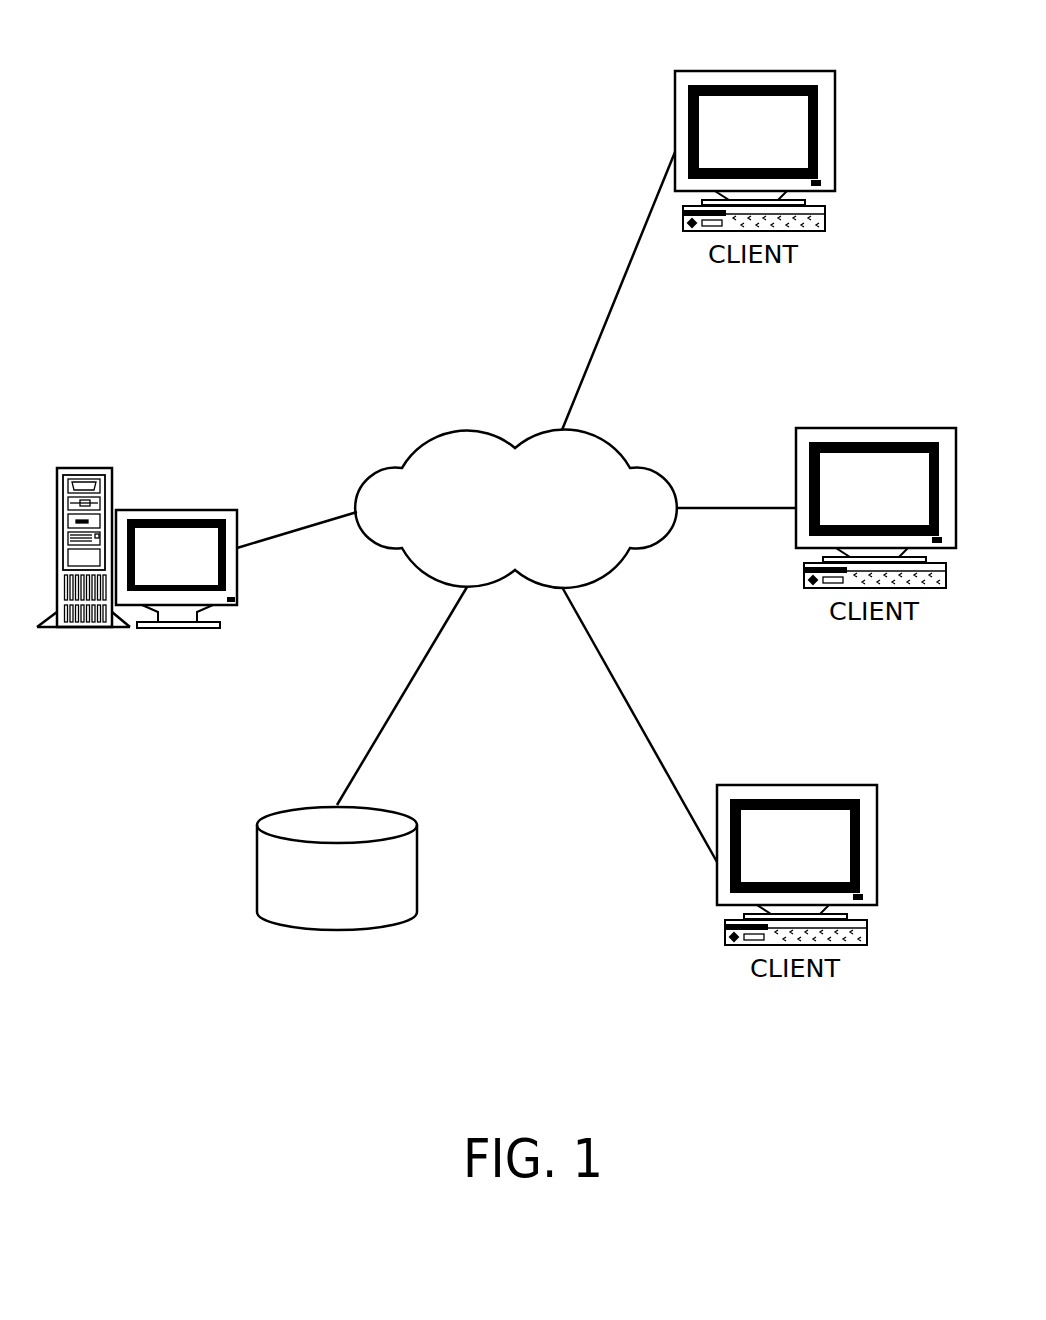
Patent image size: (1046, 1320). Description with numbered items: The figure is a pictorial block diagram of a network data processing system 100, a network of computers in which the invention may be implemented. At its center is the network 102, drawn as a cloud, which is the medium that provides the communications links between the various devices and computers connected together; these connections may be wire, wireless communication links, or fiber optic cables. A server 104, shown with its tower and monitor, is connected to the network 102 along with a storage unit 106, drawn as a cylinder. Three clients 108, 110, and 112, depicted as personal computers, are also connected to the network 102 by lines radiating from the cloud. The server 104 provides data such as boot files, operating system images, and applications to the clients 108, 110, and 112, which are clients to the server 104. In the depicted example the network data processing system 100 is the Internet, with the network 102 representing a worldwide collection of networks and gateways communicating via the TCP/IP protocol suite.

The network data processing system 100 is at (535, 870).
The network 102 is at (467, 430).
The server 104 is at (137, 513).
The storage unit 106 is at (318, 913).
The client 108 is at (685, 82).
The client 110 is at (805, 440).
The client 112 is at (865, 793).